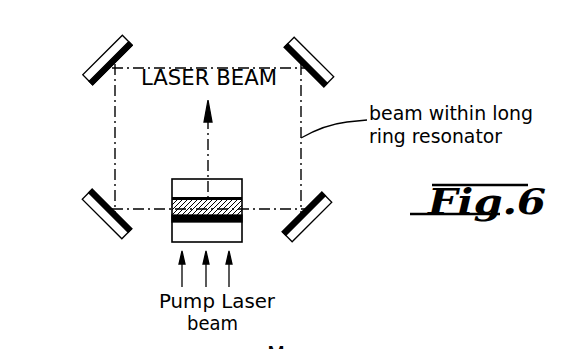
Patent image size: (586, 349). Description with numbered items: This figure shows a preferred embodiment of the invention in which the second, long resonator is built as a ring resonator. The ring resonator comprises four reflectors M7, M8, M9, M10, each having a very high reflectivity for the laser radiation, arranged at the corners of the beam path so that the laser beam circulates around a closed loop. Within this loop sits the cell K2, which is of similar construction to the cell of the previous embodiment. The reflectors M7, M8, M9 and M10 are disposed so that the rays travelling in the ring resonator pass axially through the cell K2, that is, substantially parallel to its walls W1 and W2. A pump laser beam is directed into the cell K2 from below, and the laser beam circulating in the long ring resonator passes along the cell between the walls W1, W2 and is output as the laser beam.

The reflector M7 is at (83, 77).
The reflector M8 is at (310, 62).
The reflector M9 is at (101, 215).
The reflector M10 is at (303, 217).
The cell K2 is at (209, 202).
The wall W1 is at (187, 221).
The wall W2 is at (189, 197).